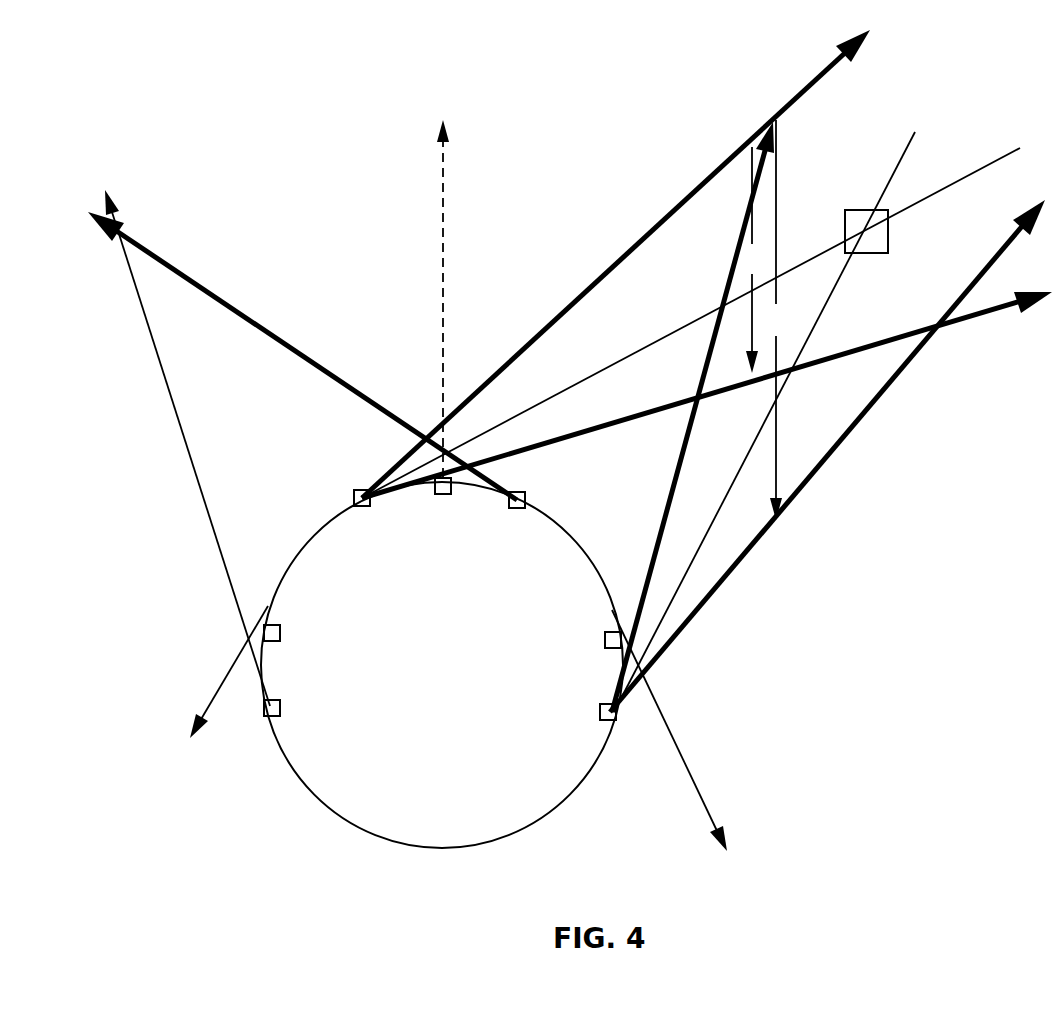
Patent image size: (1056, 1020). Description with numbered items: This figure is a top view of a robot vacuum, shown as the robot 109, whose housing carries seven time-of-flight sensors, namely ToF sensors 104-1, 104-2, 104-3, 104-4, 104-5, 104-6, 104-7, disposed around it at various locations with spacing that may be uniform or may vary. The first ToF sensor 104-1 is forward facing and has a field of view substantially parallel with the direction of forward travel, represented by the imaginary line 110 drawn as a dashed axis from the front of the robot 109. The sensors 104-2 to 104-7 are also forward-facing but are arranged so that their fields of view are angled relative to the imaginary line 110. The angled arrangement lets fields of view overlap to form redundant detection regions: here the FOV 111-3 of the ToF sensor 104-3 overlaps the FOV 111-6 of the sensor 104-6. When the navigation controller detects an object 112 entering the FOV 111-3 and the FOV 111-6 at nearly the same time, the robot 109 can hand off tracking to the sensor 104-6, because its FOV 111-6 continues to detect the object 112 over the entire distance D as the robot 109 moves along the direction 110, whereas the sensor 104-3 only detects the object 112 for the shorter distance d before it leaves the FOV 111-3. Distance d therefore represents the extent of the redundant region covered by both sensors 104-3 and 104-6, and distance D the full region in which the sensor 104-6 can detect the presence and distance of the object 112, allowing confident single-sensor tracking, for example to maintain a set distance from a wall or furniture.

The first ToF sensor 104-1 is at (443, 494).
The ToF sensor 104-2 is at (517, 508).
The ToF sensor 104-3 is at (363, 507).
The ToF sensor 104-4 is at (605, 646).
The ToF sensor 104-5 is at (280, 640).
The ToF sensor 104-6 is at (600, 712).
The ToF sensor 104-7 is at (280, 710).
The robot 109 is at (300, 491).
The imaginary line 110 is at (443, 188).
The FOV 111-3 is at (678, 233).
The FOV 111-6 is at (724, 471).
The object 112 is at (887, 209).